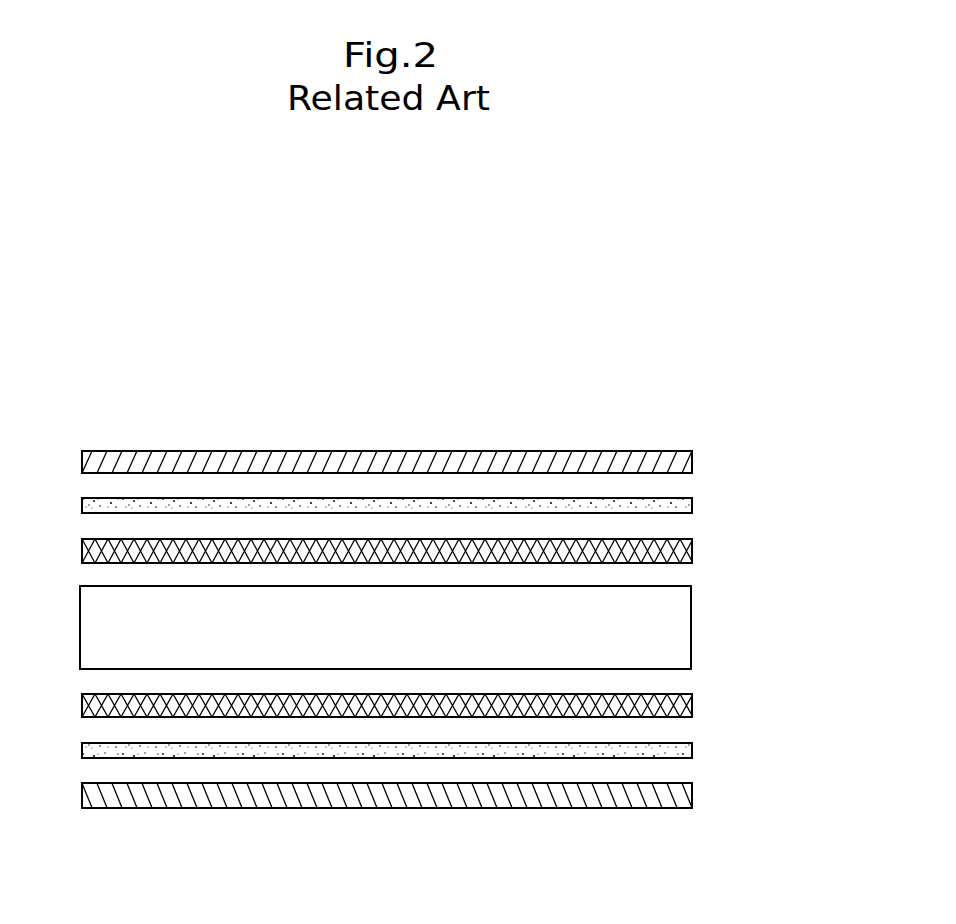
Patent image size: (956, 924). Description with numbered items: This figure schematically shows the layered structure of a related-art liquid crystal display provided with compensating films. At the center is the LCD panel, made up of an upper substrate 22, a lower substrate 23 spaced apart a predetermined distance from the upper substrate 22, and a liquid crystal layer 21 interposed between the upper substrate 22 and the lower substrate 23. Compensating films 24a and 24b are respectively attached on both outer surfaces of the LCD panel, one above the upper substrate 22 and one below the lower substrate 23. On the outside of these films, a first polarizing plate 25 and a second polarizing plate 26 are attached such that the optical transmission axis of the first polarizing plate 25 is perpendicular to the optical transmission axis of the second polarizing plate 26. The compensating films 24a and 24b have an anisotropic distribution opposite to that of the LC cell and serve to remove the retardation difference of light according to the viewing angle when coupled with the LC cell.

The liquid crystal layer 21 is at (691, 626).
The upper substrate 22 is at (692, 549).
The lower substrate 23 is at (692, 706).
The compensating film 24a is at (692, 505).
The compensating film 24b is at (692, 750).
The first polarizing plate 25 is at (692, 461).
The second polarizing plate 26 is at (692, 793).